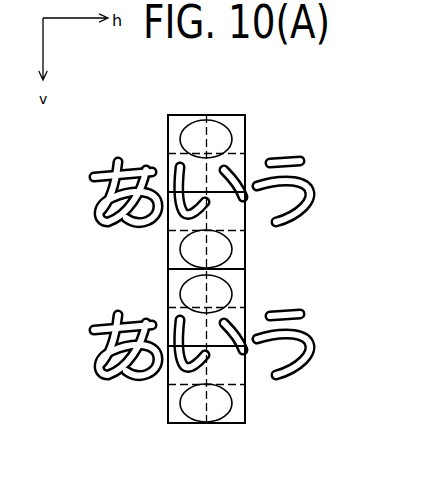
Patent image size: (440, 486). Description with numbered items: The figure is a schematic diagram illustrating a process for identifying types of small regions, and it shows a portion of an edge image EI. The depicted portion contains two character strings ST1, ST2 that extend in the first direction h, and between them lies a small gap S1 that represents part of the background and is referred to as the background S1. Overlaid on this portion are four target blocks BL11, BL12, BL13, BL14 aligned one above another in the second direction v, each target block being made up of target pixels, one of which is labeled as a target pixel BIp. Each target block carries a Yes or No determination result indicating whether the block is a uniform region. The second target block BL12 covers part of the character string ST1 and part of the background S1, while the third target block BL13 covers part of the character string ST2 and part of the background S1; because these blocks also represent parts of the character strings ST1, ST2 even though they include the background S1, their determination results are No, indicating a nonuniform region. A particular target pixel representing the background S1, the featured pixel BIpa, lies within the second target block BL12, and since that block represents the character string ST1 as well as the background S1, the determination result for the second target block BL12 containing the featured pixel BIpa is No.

The first target block BL11 is at (245, 118).
The second target block BL12 is at (284, 238).
The third target block BL13 is at (245, 290).
The fourth target block BL14 is at (235, 405).
The featured pixel BIpa is at (246, 254).
The target pixel BIp is at (172, 402).
The character string ST1 is at (70, 204).
The character string ST2 is at (70, 359).
The background S1 is at (129, 275).
The edge image EI is at (106, 412).